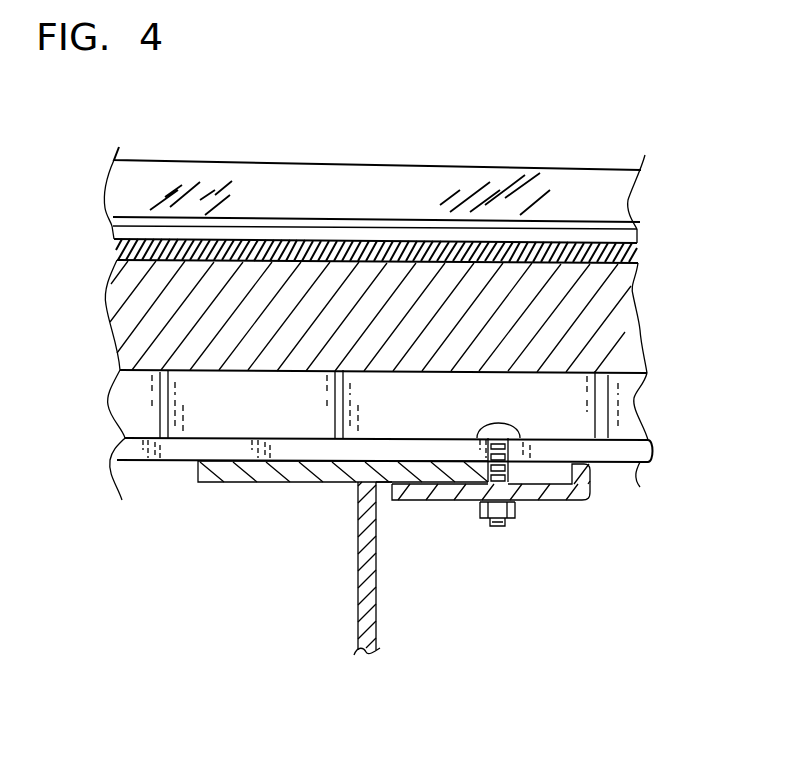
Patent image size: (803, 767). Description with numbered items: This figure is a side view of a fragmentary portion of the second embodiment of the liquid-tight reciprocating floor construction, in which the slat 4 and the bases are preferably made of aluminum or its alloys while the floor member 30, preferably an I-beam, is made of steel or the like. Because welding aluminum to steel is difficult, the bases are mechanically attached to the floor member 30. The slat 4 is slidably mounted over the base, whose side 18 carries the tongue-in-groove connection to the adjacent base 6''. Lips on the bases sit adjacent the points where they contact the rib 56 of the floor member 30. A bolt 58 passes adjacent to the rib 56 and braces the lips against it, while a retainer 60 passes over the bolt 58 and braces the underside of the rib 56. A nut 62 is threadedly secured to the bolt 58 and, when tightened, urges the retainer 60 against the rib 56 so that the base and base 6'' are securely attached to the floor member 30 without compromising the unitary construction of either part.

The slat 4 is at (547, 182).
The side of base 18 is at (634, 257).
The base 6'' is at (415, 316).
The floor member 30 is at (365, 537).
The rib 56 is at (459, 468).
The bolt 58 is at (503, 528).
The retainer 60 is at (412, 490).
The nut 62 is at (516, 508).